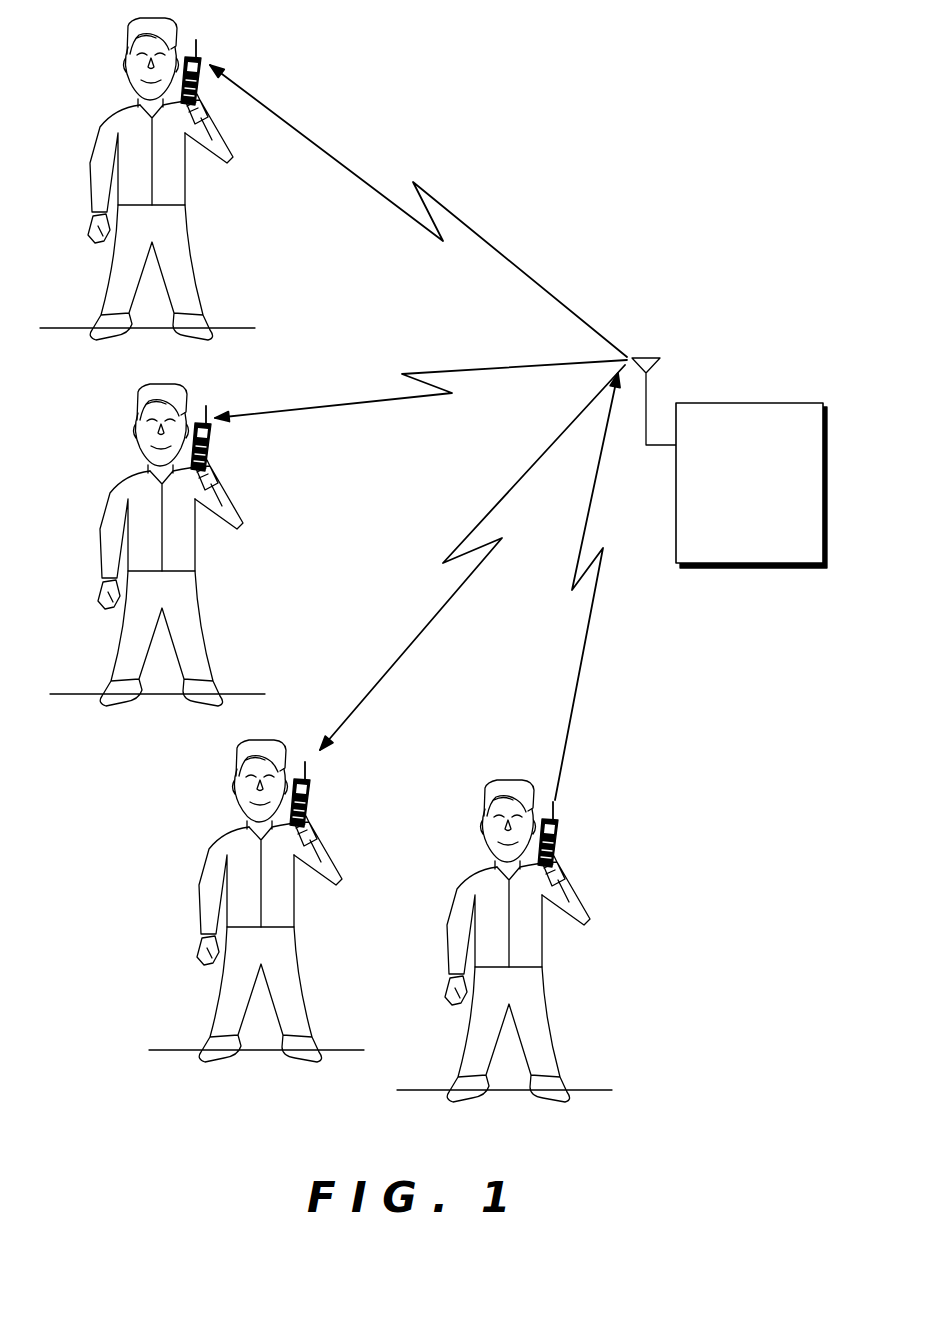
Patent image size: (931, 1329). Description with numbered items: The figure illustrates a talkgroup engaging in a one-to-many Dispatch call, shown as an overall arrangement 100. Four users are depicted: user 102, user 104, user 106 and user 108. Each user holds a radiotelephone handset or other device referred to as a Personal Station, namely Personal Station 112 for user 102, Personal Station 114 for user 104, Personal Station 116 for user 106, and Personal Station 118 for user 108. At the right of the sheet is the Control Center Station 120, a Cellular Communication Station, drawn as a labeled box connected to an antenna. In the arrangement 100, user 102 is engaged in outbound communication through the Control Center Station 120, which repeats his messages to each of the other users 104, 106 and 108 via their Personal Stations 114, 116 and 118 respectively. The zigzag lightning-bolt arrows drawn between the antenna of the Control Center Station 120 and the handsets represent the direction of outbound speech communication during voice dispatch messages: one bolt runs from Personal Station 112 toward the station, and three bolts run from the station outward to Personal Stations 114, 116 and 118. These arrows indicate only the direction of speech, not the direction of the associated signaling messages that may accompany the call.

The arrangement 100 is at (720, 997).
The user 102 is at (504, 941).
The user 104 is at (256, 901).
The user 106 is at (157, 545).
The user 108 is at (117, 112).
The Personal Station 112 is at (583, 834).
The Personal Station 114 is at (335, 794).
The Personal Station 116 is at (236, 438).
The Personal Station 118 is at (201, 57).
The Control Center Station 120 is at (764, 403).